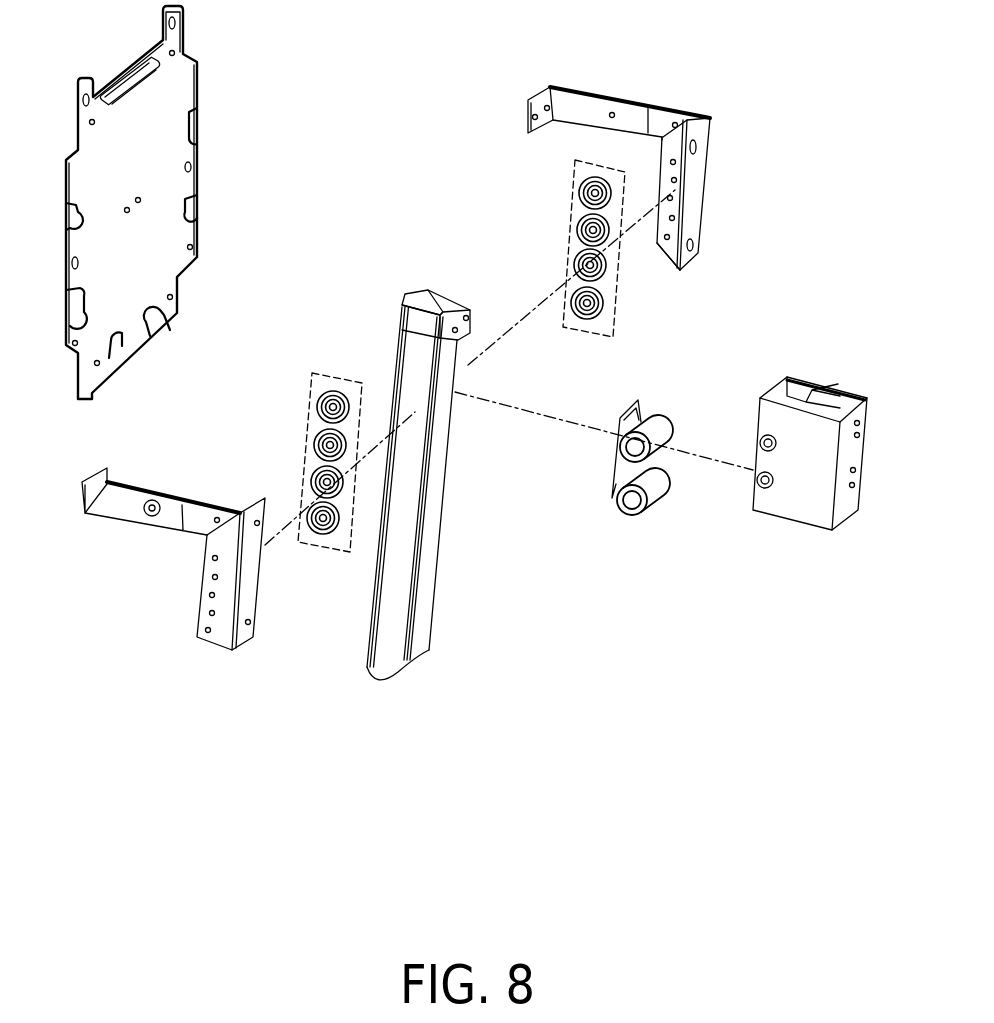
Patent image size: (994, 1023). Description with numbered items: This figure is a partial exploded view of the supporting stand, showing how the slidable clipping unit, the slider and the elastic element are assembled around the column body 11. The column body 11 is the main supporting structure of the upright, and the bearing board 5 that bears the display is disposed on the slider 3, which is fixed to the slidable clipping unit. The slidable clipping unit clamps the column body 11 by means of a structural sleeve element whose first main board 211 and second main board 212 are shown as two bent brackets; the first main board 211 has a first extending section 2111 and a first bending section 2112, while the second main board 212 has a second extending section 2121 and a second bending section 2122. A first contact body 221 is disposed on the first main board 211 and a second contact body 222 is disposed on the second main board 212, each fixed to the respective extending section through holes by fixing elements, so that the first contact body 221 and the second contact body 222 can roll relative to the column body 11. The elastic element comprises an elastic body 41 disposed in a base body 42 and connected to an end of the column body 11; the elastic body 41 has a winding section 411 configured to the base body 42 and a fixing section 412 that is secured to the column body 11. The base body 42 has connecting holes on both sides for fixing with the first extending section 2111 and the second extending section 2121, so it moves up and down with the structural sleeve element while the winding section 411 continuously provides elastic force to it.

The bearing board 5 is at (128, 72).
The column body 11 is at (437, 528).
The slider 3 is at (480, 408).
The second main board 212 is at (703, 174).
The second extending section 2121 is at (692, 113).
The second bending section 2122 is at (708, 166).
The first main board 211 is at (202, 604).
The first extending section 2111 is at (132, 497).
The first bending section 2112 is at (252, 617).
The second contact body 222 is at (555, 253).
The first contact body 221 is at (292, 446).
The elastic body 41 is at (638, 475).
The winding section 411 is at (656, 428).
The fixing section 412 is at (626, 412).
The base body 42 is at (787, 515).